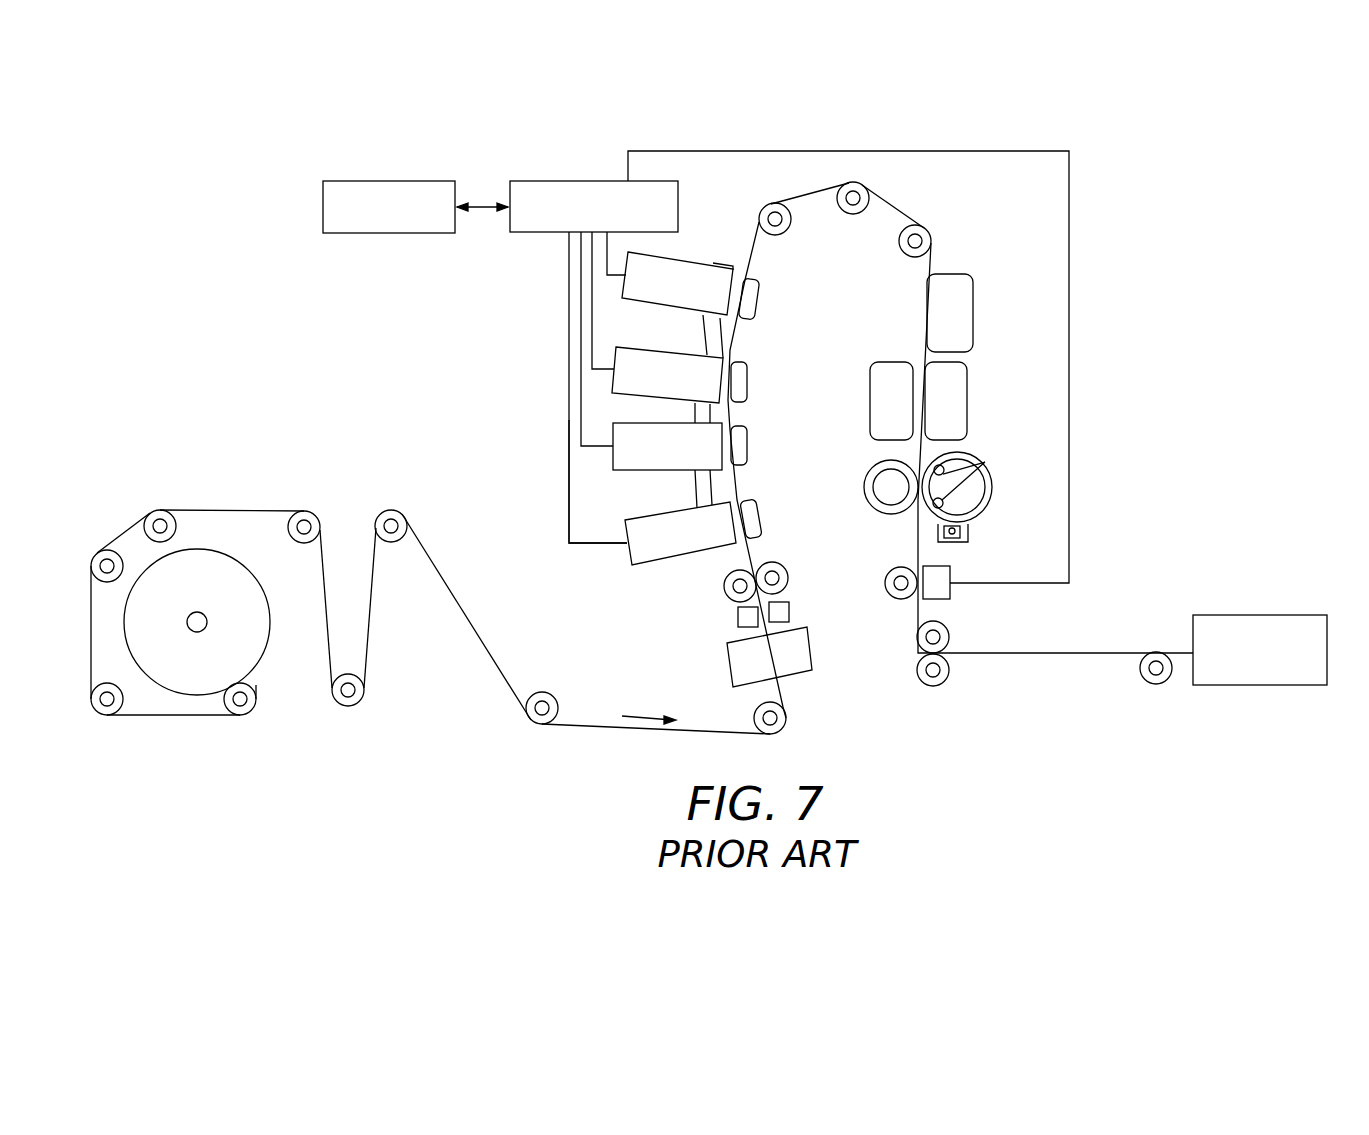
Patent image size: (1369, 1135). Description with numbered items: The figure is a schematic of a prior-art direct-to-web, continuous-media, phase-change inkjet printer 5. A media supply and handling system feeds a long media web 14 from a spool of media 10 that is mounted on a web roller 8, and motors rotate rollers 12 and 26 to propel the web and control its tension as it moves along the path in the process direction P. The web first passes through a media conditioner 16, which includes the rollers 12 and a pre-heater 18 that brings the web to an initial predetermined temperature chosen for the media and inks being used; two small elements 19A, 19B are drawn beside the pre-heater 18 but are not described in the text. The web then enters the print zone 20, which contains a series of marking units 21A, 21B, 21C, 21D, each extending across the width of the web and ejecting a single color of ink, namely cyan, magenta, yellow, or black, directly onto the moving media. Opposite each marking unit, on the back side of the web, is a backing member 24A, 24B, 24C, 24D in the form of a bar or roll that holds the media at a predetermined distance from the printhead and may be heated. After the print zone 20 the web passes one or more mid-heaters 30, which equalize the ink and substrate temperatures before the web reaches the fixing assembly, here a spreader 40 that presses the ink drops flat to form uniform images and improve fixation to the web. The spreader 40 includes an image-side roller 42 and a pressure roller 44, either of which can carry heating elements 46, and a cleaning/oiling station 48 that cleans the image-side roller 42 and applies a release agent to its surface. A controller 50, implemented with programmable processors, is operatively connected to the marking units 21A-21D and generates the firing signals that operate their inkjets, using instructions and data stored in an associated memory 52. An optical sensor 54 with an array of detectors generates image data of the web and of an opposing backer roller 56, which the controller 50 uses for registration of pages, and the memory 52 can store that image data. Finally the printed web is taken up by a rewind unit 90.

The inkjet printer 5 is at (405, 352).
The web roller 8 is at (197, 632).
The spool of media 10 is at (255, 576).
The rollers 12 is at (391, 542).
The media web 14 is at (215, 510).
The media conditioner 16 is at (540, 664).
The pre-heater 18 is at (814, 640).
The sensor 19A is at (737, 618).
The sensor 19B is at (792, 609).
The print zone 20 is at (542, 462).
The marking unit 21A is at (684, 565).
The marking unit 21B is at (652, 470).
The marking unit 21C is at (645, 398).
The marking unit 21D is at (672, 312).
The backing member 24A is at (765, 512).
The backing member 24B is at (749, 445).
The backing member 24C is at (749, 382).
The backing member 24D is at (759, 300).
The rollers 26 is at (788, 232).
The mid-heater 30 is at (893, 360).
The spreader 40 is at (983, 430).
The image-side roller 42 is at (990, 505).
The pressure roller 44 is at (878, 500).
The heating elements 46 is at (945, 468).
The cleaning/oiling station 48 is at (970, 532).
The controller 50 is at (589, 180).
The memory 52 is at (397, 180).
The optical sensor 54 is at (952, 599).
The backer roller 56 is at (884, 580).
The rewind unit 90 is at (1244, 593).
The process direction P is at (640, 716).